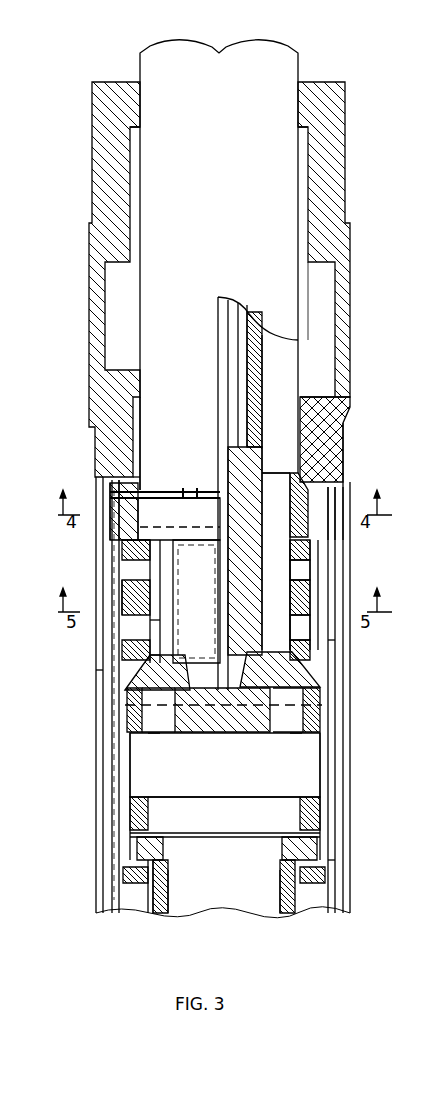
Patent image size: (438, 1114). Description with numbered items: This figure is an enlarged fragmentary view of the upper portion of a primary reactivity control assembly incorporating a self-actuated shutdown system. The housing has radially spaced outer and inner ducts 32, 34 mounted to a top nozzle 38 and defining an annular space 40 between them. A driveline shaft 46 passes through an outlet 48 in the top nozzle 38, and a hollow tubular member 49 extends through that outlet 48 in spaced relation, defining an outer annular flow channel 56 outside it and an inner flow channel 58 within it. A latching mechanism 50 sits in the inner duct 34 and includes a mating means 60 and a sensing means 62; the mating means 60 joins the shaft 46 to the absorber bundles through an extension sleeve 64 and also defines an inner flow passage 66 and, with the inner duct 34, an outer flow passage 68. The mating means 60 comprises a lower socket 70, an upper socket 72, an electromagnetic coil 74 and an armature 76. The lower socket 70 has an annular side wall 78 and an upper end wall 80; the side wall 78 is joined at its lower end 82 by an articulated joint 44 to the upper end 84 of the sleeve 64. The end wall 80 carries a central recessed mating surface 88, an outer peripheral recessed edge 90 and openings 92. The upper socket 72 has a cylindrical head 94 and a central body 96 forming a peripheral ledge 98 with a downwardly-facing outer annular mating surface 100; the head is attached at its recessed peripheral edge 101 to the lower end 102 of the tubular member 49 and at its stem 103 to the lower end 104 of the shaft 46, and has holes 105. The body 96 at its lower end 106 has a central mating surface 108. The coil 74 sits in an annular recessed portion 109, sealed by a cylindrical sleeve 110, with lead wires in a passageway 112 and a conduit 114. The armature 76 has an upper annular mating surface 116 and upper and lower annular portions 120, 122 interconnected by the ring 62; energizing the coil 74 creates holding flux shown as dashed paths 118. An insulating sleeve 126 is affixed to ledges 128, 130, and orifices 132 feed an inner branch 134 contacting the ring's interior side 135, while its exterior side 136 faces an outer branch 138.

The outer duct 32 is at (338, 820).
The inner duct 34 is at (338, 858).
The top nozzle 38 is at (348, 190).
The annular space 40 is at (352, 775).
The articulated joint 44 is at (150, 890).
The driveline shaft 46 is at (268, 348).
The outlet 48 is at (300, 172).
The hollow tubular member 49 is at (300, 72).
The latching mechanism 50 is at (183, 488).
The outer annular flow channel 56 is at (134, 125).
The inner flow channel 58 is at (282, 335).
The mating means 60 is at (247, 740).
The sensing means 62 is at (318, 590).
The extension sleeve 64 is at (175, 895).
The inner flow passage 66 is at (164, 738).
The outer flow passage 68 is at (338, 490).
The lower socket 70 is at (222, 735).
The upper socket 72 is at (196, 480).
The electromagnetic coil 74 is at (300, 420).
The armature 76 is at (338, 650).
The annular side wall 78 is at (130, 790).
The upper end wall 80 is at (130, 725).
The lower end 82 is at (132, 822).
The upper end 84 is at (125, 870).
The central recessed mating surface 88 is at (310, 668).
The outer peripheral recessed edge 90 is at (322, 705).
The openings 92 is at (270, 738).
The upper cylindrical head 94 is at (150, 505).
The central cylindrical body 96 is at (200, 610).
The peripheral ledge 98 is at (115, 490).
The outer annular mating surface 100 is at (122, 545).
The upper recessed peripheral edge 101 is at (340, 450).
The lower end 102 is at (338, 420).
The central upwardly protruding stem 103 is at (272, 500).
The lower end 104 is at (240, 425).
The holes 105 is at (335, 398).
The lower end 106 is at (160, 675).
The central mating surface 108 is at (200, 738).
The annular recessed portion 109 is at (318, 640).
The cylindrical sleeve 110 is at (318, 575).
The passageway 112 is at (238, 510).
The conduit 114 is at (218, 330).
The annular mating surface 116 is at (110, 500).
The dashed paths 118 is at (127, 700).
The upper annular portion 120 is at (118, 515).
The lower annular portion 122 is at (112, 680).
The insulating sleeve 126 is at (160, 630).
The upper inwardly-directed ledge 128 is at (160, 552).
The lower inwardly-directed ledge 130 is at (160, 655).
The orifices 132 is at (122, 550).
The inner branch 134 is at (343, 520).
The interior side 135 is at (162, 580).
The exterior side 136 is at (122, 595).
The outer branch 138 is at (318, 615).